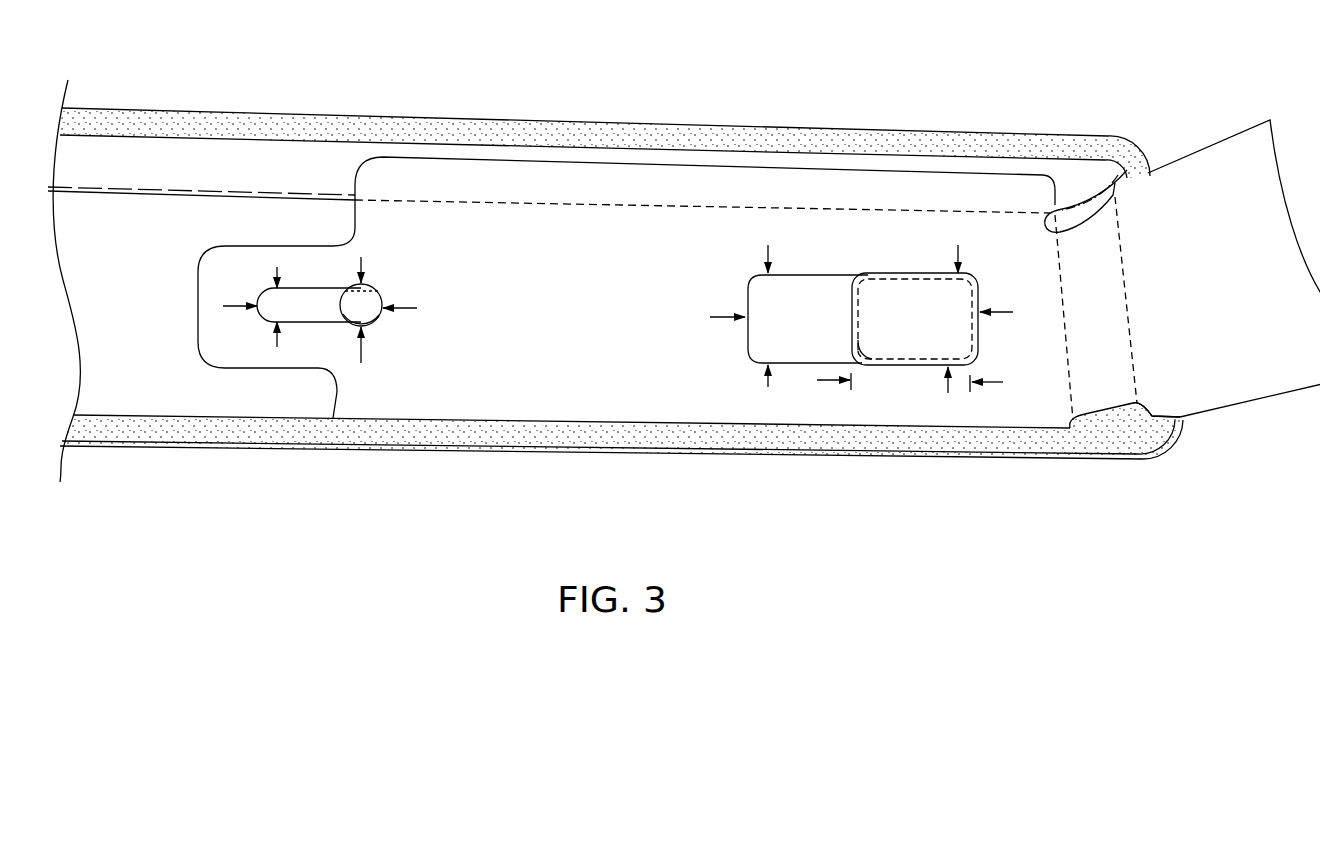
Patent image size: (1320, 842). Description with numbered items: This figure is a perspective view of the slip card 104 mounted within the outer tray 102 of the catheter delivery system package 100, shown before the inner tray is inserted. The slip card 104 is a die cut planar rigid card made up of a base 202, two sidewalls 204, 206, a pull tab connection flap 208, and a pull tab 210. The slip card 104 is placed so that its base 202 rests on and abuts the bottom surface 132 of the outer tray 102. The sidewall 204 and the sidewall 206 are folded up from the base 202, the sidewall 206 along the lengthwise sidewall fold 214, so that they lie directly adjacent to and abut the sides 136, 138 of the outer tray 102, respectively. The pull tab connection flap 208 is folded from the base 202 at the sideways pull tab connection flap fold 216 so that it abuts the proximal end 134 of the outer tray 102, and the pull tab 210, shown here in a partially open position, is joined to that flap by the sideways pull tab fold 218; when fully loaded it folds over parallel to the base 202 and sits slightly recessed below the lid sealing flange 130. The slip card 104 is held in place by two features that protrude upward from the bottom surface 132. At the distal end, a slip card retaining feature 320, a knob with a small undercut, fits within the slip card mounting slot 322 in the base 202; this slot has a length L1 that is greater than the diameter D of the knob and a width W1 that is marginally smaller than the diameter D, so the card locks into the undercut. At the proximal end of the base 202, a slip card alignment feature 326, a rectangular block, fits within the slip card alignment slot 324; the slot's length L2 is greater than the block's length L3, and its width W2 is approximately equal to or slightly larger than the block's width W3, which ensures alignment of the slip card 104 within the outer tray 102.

The catheter delivery system package 100 is at (410, 500).
The outer tray 102 is at (467, 110).
The slip card 104 is at (660, 225).
The lid sealing flange 130 is at (282, 130).
The bottom surface 132 is at (160, 237).
The proximal end 134 is at (1102, 205).
The side 136 is at (268, 480).
The side 138 is at (393, 102).
The base 202 is at (527, 342).
The sidewall 204 is at (610, 420).
The sidewall 206 is at (478, 185).
The pull tab connection flap 208 is at (1100, 297).
The pull tab 210 is at (1230, 231).
The lengthwise sidewall fold 214 is at (582, 207).
The sideways pull tab connection flap fold 216 is at (1070, 383).
The sideways pull tab fold 218 is at (1133, 363).
The slip card retaining feature 320 is at (365, 298).
The slip card mounting slot 322 is at (333, 287).
The slip card alignment slot 324 is at (792, 275).
The slip card alignment feature 326 is at (890, 302).
The diameter D is at (362, 353).
The length L1 is at (400, 310).
The length L2 is at (727, 313).
The length L3 is at (830, 383).
The width W1 is at (277, 268).
The width W2 is at (767, 383).
The width W3 is at (958, 250).